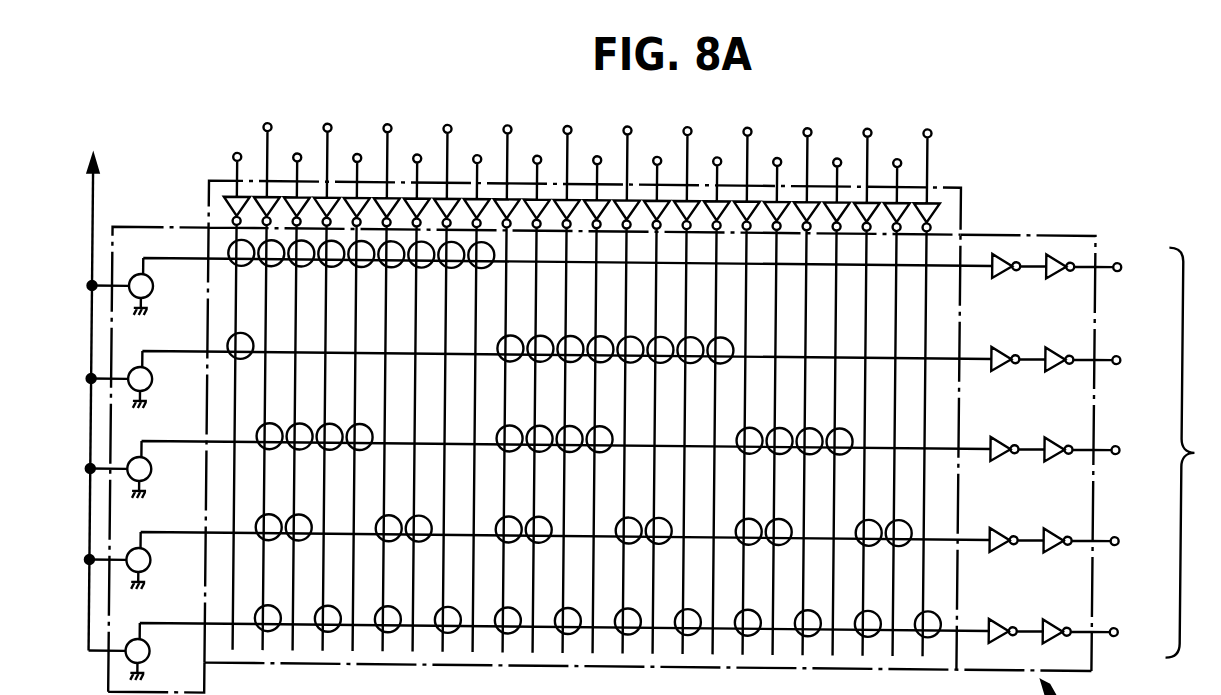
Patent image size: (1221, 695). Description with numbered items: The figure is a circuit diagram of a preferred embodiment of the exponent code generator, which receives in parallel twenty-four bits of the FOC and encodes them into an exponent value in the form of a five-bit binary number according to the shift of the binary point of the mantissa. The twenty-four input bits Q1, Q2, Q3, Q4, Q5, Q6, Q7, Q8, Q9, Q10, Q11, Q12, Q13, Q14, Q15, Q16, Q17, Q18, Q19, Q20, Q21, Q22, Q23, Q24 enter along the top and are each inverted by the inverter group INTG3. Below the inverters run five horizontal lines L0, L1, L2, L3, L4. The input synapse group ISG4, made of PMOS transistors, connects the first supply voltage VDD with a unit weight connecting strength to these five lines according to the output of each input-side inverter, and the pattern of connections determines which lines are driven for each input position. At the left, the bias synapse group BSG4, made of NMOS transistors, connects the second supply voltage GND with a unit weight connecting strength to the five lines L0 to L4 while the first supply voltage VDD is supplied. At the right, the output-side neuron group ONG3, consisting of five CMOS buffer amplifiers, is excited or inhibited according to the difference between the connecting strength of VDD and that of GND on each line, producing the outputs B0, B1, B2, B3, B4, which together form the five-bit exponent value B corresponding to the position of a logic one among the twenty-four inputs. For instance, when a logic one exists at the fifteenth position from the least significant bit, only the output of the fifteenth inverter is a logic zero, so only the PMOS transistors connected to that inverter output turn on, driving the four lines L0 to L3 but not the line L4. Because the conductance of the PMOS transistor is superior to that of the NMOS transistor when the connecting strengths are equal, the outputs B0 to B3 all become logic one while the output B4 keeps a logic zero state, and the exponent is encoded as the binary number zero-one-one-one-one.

The input bit line Q1 is at (925, 380).
The input bit line Q2 is at (895, 397).
The input bit line Q3 is at (865, 380).
The input bit line Q4 is at (835, 396).
The input bit line Q5 is at (805, 379).
The input bit line Q6 is at (775, 396).
The input bit line Q7 is at (745, 379).
The input bit line Q8 is at (715, 395).
The input bit line Q9 is at (685, 378).
The input bit line Q10 is at (655, 395).
The input bit line Q11 is at (625, 377).
The input bit line Q12 is at (595, 394).
The input bit line Q13 is at (565, 377).
The input bit line Q14 is at (535, 393).
The input bit line Q15 is at (505, 376).
The input bit line Q16 is at (475, 393).
The input bit line Q17 is at (445, 376).
The input bit line Q18 is at (415, 392).
The input bit line Q19 is at (385, 375).
The input bit line Q20 is at (355, 392).
The input bit line Q21 is at (325, 375).
The input bit line Q22 is at (295, 391).
The input bit line Q23 is at (265, 374).
The input bit line Q24 is at (235, 391).
The line L0 is at (210, 624).
The line L1 is at (210, 533).
The line L2 is at (210, 442).
The line L3 is at (210, 352).
The line L4 is at (210, 259).
The output B0 is at (1072, 632).
The output B1 is at (1073, 541).
The output B2 is at (1073, 450).
The output B3 is at (1074, 360).
The output B4 is at (1075, 267).
The exponent value output B is at (1193, 453).
The first supply voltage VDD is at (96, 390).
The bias synapse group BSG4 is at (172, 241).
The inverter group INTG3 is at (951, 192).
The output-side neuron group ONG3 is at (1008, 244).
The input synapse group ISG4 is at (882, 661).